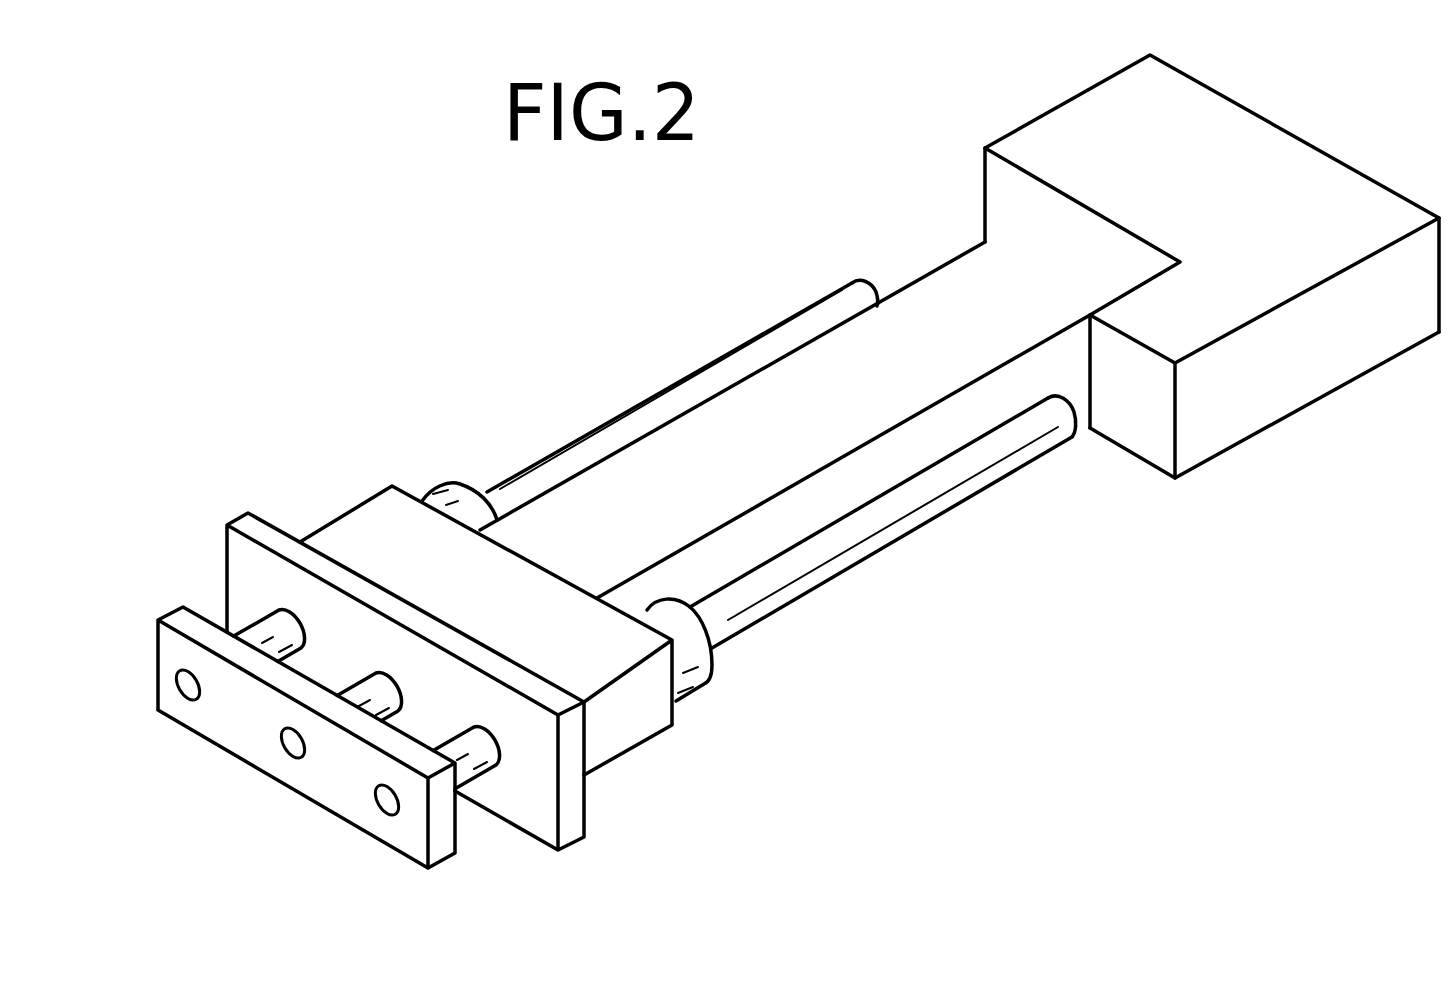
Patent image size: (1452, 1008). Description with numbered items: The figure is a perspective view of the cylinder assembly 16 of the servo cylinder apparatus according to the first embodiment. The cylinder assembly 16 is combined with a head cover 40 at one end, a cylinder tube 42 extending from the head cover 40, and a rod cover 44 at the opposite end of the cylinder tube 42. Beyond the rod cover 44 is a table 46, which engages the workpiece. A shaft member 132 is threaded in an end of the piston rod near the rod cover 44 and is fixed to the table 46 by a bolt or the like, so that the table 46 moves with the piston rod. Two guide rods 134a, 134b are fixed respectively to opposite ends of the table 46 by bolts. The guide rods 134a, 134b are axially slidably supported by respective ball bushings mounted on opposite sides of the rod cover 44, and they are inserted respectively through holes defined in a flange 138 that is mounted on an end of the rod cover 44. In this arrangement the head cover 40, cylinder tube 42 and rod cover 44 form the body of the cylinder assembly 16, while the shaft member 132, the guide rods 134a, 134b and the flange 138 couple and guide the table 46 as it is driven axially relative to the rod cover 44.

The cylinder assembly 16 is at (477, 273).
The head cover 40 is at (1053, 145).
The cylinder tube 42 is at (923, 312).
The rod cover 44 is at (390, 513).
The table 46 is at (238, 742).
The shaft member 132 is at (365, 697).
The guide rod 134a is at (663, 408).
The guide rod 134b is at (908, 512).
The flange 138 is at (253, 566).